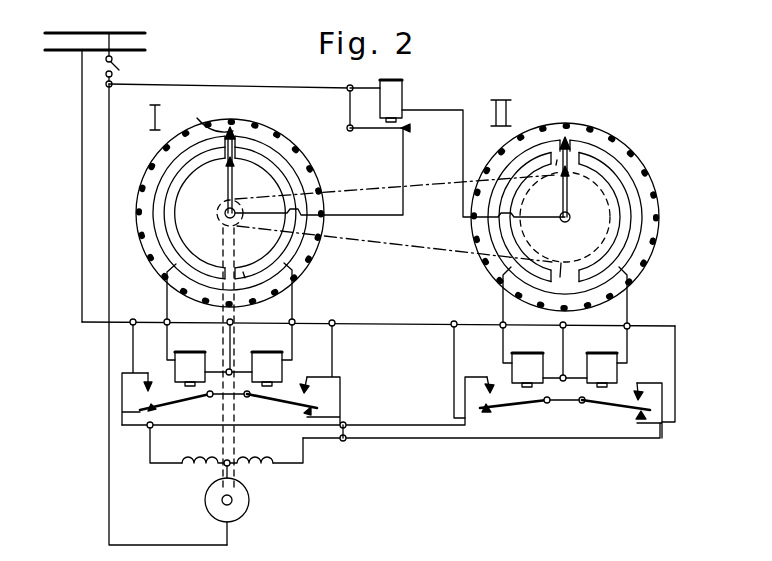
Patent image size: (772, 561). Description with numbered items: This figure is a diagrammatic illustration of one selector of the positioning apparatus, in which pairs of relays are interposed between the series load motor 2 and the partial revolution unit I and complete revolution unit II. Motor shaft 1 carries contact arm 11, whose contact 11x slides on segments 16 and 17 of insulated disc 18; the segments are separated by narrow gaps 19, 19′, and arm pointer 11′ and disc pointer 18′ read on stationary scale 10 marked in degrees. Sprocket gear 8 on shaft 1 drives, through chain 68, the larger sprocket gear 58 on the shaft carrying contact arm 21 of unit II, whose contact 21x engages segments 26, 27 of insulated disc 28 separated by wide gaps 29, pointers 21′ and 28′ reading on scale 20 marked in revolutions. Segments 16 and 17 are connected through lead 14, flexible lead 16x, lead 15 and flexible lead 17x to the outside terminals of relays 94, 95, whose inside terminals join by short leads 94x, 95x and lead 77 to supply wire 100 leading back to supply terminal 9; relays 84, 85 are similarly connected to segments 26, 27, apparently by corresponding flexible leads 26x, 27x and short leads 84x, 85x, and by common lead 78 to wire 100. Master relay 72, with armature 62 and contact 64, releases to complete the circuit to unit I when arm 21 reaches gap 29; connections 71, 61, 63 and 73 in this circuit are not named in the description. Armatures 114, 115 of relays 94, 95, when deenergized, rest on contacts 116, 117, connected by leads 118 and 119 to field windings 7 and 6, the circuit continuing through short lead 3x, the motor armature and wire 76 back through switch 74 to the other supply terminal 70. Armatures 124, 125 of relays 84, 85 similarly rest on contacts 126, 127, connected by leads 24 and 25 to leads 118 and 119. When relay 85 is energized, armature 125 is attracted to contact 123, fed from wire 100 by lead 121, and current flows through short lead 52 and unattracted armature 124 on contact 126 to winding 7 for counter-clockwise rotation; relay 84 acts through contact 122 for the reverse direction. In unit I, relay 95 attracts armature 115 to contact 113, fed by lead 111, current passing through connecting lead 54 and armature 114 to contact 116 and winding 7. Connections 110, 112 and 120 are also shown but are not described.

The supply terminal 9 is at (82, 33).
The supply terminal 70 is at (112, 33).
The main switch 74 is at (119, 67).
The conductor 71 is at (186, 86).
The wire 76 is at (110, 165).
The supply wire 100 is at (80, 160).
The contact 61 is at (347, 104).
The master relay 72 is at (398, 96).
The armature 62 is at (379, 131).
The contact 64 is at (409, 130).
The conductor 63 is at (399, 175).
The chain 68 is at (427, 187).
The conductor 73 is at (472, 234).
The stationary circular scale 10 is at (280, 123).
The insulated disc 18 is at (293, 167).
The pointer 18′ is at (236, 133).
The segment 17 is at (293, 252).
The segment 16 is at (186, 243).
The flexible lead 17x is at (296, 268).
The flexible lead 16x is at (166, 268).
The contact arm 11 is at (236, 184).
The pointer 11′ is at (238, 130).
The contact 11x is at (229, 168).
The sprocket gear 8 is at (222, 213).
The gap 19 is at (208, 115).
The gap 19′ is at (244, 272).
The motor shaft 1 is at (227, 243).
The lead 14 is at (166, 299).
The lead 15 is at (294, 300).
The stationary circular scale 20 is at (601, 126).
The insulated disc 28 is at (640, 210).
The pointer 28′ is at (569, 138).
The segment 27 is at (608, 251).
The segment 26 is at (521, 250).
The segment end 27x is at (637, 272).
The segment end 26x is at (505, 272).
The gap 29 is at (557, 160).
The contact arm 21 is at (570, 204).
The pointer 21′ is at (572, 136).
The contact 21x is at (566, 178).
The sprocket gear 58 is at (594, 188).
The lead 24 is at (502, 300).
The lead 25 is at (629, 300).
The lead 77 is at (238, 344).
The common lead 78 is at (568, 345).
The relay frame 110 is at (132, 360).
The lead 111 is at (333, 348).
The contact 116 is at (121, 381).
The contact 117 is at (307, 383).
The conductor 112 is at (140, 411).
The contact 113 is at (323, 409).
The armature 114 is at (166, 403).
The armature 115 is at (280, 403).
The connecting lead 54 is at (244, 397).
The relay 94 is at (190, 360).
The relay 95 is at (262, 360).
The short lead 94x is at (216, 374).
The short lead 95x is at (245, 374).
The lead 118 is at (150, 448).
The lead 119 is at (303, 478).
The field winding 7 is at (196, 462).
The field winding 6 is at (250, 462).
The short lead 3x is at (225, 470).
The load motor 2 is at (250, 502).
The relay frame 120 is at (452, 348).
The lead 121 is at (676, 360).
The contact 126 is at (470, 388).
The contact 127 is at (643, 389).
The relay contact 122 is at (487, 413).
The contact 123 is at (647, 418).
The armature 124 is at (531, 406).
The armature 125 is at (615, 407).
The short lead 52 is at (574, 403).
The relay 84 is at (516, 361).
The relay 85 is at (591, 361).
The coil terminal 84x is at (554, 371).
The coil terminal 85x is at (577, 371).